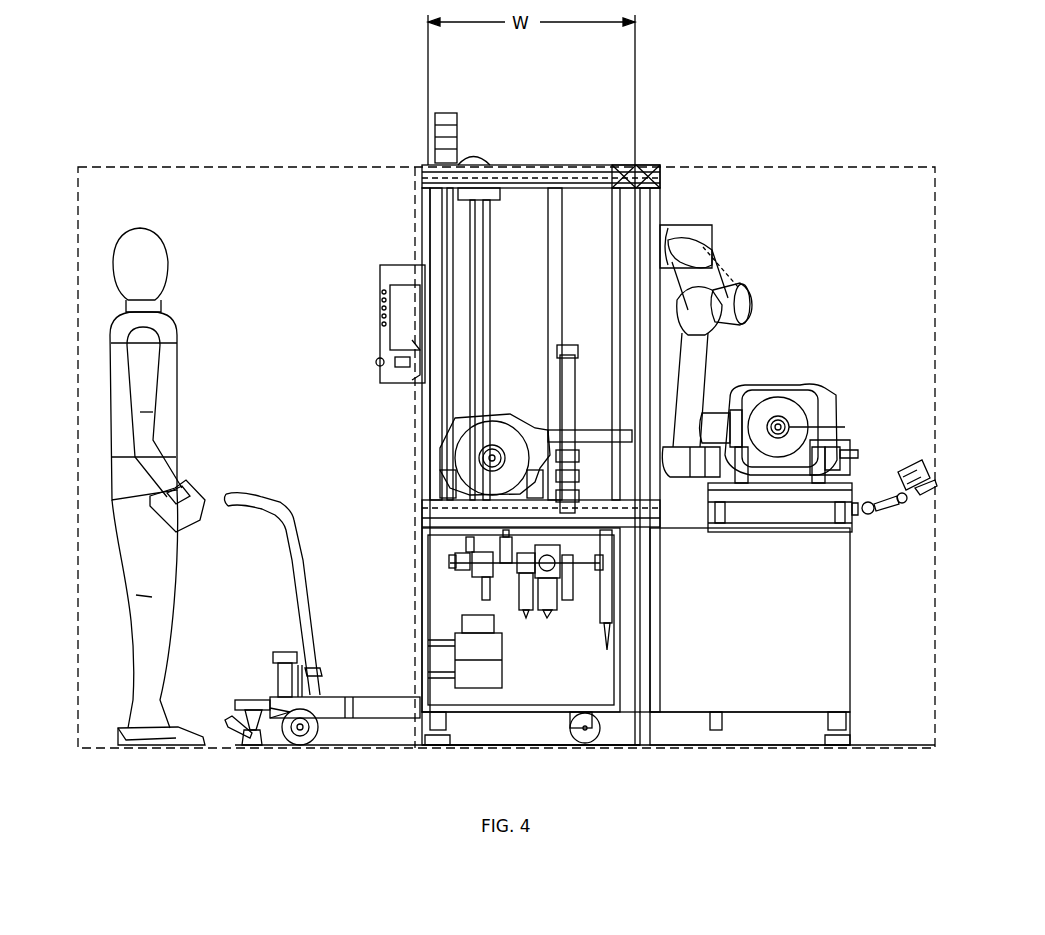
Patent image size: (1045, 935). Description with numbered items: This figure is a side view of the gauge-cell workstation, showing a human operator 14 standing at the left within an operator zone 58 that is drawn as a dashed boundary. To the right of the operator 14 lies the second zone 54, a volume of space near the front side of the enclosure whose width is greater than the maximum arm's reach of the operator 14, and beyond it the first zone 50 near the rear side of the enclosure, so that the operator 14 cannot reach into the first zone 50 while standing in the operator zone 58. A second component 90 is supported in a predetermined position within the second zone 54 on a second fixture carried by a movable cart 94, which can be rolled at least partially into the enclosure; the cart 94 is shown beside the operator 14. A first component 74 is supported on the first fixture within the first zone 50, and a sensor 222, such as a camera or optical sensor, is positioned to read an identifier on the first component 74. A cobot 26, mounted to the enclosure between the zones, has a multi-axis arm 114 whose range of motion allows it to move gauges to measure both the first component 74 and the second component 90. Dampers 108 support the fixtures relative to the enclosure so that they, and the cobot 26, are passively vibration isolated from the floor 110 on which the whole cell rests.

The human operator 14 is at (114, 305).
The cobot 26 is at (740, 281).
The first zone 50 is at (715, 152).
The second zone 54 is at (554, 170).
The operator zone 58 is at (145, 160).
The first component 74 is at (810, 385).
The second component 90 is at (450, 432).
The cart 94 is at (283, 494).
The dampers 108 is at (848, 722).
The floor 110 is at (490, 752).
The multi-axis arm 114 is at (717, 274).
The sensor 222 is at (917, 465).